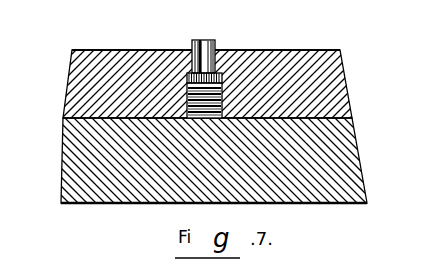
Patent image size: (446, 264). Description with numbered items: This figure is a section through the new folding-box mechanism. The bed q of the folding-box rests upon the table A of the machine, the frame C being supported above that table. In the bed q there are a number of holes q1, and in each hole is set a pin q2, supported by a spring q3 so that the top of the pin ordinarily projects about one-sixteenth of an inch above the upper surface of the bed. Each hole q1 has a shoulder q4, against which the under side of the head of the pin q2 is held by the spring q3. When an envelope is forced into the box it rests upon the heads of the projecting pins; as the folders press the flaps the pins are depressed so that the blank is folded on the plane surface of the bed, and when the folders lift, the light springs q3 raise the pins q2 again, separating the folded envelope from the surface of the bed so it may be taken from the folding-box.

The frame C is at (342, 73).
The table A is at (364, 146).
The bed of the folding-box q is at (214, 64).
The hole q1 is at (192, 52).
The pin q2 is at (222, 63).
The spring q3 is at (188, 90).
The shoulder q4 is at (233, 48).